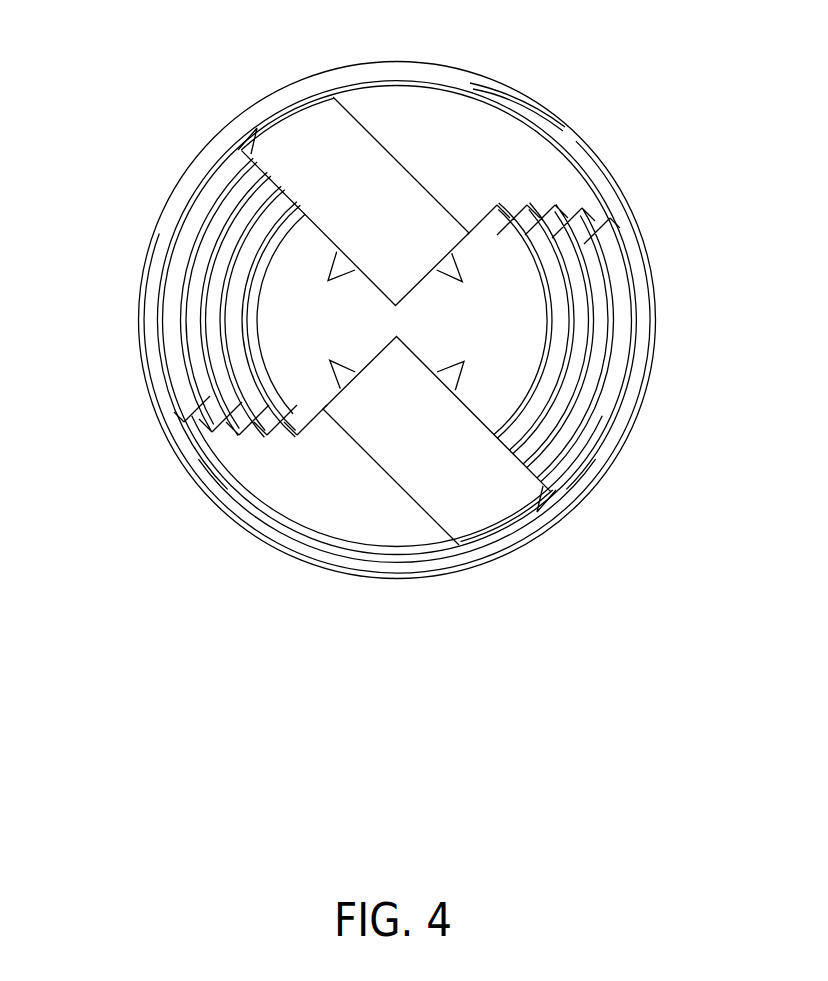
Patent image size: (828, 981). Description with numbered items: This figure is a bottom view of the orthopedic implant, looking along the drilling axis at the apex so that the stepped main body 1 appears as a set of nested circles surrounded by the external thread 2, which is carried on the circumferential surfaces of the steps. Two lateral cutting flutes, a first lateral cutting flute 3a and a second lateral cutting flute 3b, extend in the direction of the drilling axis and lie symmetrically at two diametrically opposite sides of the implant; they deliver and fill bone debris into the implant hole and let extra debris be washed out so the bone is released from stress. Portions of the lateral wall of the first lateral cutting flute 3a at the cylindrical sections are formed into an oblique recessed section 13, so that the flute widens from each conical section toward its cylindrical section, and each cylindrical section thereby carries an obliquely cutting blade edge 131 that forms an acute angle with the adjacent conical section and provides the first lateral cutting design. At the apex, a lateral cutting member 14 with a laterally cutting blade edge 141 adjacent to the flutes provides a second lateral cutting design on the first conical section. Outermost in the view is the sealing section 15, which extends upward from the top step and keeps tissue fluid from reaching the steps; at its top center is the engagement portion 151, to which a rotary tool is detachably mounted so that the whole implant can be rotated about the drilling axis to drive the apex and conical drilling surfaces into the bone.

The main body 1 is at (170, 104).
The external thread 2 is at (370, 327).
The oblique recessed section 13 is at (232, 445).
The obliquely cutting blade edge 131 is at (213, 427).
The lateral cutting member 14 is at (450, 267).
The laterally cutting blade edge 141 is at (335, 272).
The sealing section 15 is at (263, 113).
The engagement portion 151 is at (616, 185).
The first lateral cutting flute 3a is at (408, 128).
The second lateral cutting flute 3b is at (380, 520).